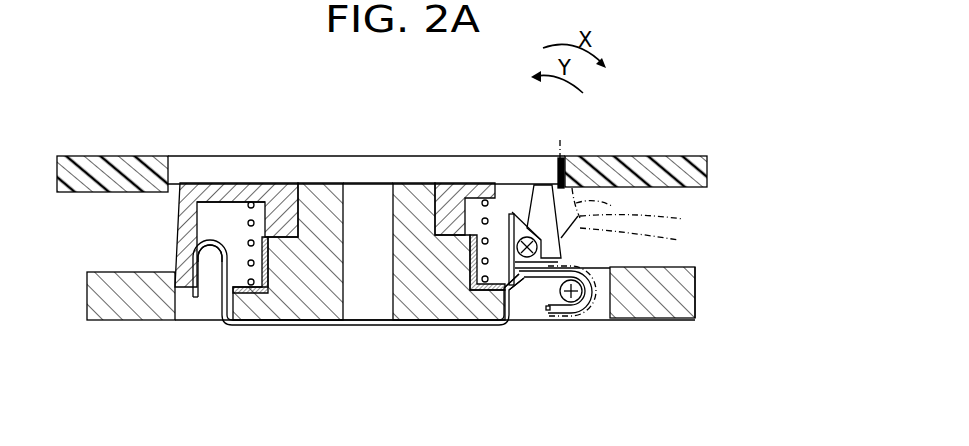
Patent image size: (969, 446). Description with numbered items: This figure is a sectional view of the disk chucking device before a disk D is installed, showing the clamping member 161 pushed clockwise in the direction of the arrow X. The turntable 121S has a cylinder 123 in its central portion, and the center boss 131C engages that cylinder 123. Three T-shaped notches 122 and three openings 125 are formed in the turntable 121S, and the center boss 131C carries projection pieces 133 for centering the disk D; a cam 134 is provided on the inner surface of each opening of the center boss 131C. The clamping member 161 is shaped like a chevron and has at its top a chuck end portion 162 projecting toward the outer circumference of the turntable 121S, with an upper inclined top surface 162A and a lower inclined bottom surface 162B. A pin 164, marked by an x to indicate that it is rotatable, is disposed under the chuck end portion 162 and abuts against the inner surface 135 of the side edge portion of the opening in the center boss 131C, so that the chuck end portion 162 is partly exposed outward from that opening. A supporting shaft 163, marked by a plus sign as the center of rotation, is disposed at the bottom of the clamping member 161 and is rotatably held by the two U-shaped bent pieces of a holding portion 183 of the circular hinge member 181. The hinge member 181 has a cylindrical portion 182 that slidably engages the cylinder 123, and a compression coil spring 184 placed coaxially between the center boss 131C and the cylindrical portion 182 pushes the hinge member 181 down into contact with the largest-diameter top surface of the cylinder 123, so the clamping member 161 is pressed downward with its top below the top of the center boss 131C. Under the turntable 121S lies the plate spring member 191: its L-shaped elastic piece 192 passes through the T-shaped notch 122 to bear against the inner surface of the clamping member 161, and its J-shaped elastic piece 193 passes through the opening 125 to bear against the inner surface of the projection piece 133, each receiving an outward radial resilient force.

The disk D is at (655, 156).
The clamping member 161 is at (560, 170).
The projection piece 133 is at (178, 237).
The compression coil spring 184 is at (248, 222).
The center boss 131C is at (270, 183).
The cylinder 123 is at (327, 190).
The cylindrical portion 182 is at (296, 320).
The pin 164 is at (486, 320).
The L-shaped elastic piece 192 is at (507, 213).
The plate spring member 191 is at (405, 322).
The opening 125 is at (186, 320).
The T-shaped notch 122 is at (603, 305).
The turntable 121S is at (697, 278).
The hinge member 181 is at (248, 330).
The J-shaped elastic piece 193 is at (208, 322).
The holding portion 183 is at (532, 322).
The supporting shaft 163 is at (552, 297).
The cam 134 is at (537, 186).
The inner surface 135 is at (565, 258).
The chuck end portion 162 is at (642, 184).
The top surface 162A is at (622, 205).
The bottom surface 162B is at (658, 240).